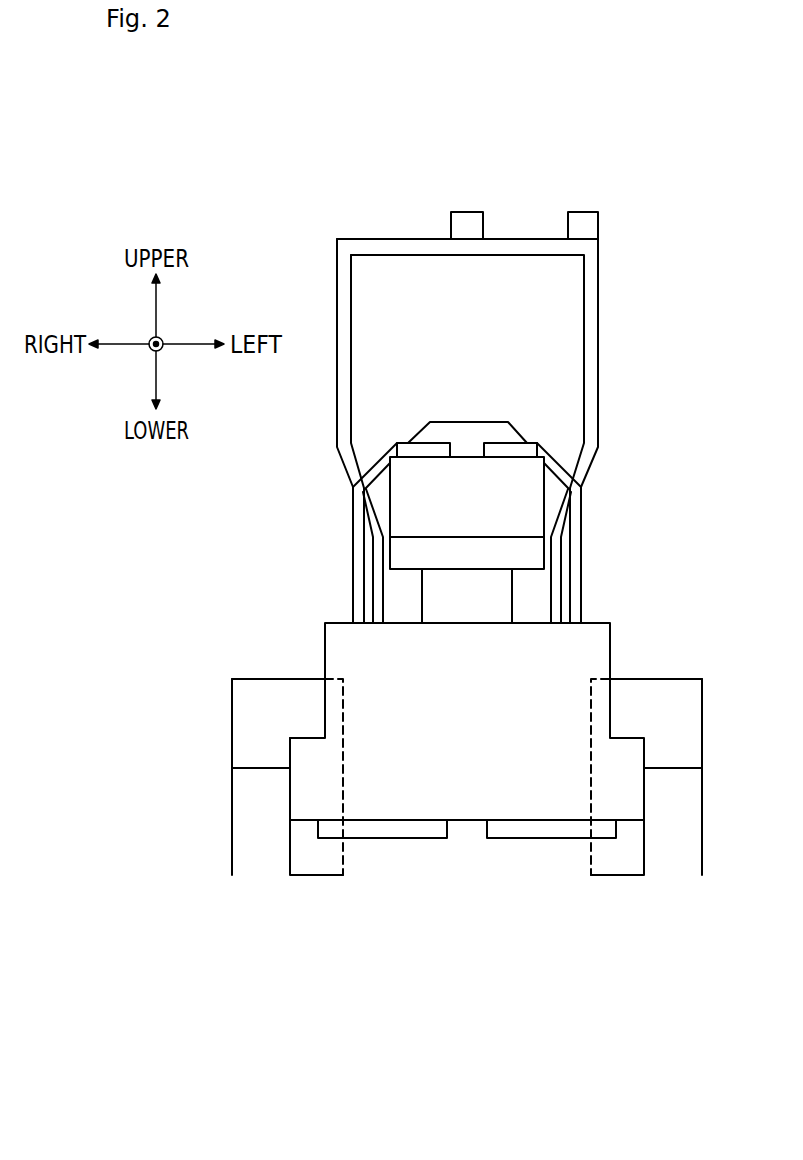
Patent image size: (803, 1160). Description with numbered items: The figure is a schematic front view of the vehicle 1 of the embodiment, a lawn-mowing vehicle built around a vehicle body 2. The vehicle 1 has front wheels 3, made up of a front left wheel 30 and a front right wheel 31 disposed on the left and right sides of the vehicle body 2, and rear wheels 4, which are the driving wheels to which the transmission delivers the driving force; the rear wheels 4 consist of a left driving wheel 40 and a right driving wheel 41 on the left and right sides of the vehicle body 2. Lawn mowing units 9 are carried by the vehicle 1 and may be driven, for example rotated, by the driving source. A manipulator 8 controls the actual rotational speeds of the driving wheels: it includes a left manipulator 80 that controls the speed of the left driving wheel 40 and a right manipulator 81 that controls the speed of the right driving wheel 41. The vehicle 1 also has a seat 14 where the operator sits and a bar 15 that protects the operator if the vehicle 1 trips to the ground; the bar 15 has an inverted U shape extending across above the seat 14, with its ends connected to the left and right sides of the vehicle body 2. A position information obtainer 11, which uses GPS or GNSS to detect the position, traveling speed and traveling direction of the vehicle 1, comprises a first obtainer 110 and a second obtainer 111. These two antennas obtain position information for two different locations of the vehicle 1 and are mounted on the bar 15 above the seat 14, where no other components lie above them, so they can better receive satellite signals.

The vehicle 1 is at (588, 92).
The vehicle body 2 is at (335, 623).
The front wheels 3 is at (467, 856).
The rear wheels 4 is at (467, 905).
The manipulator 8 is at (467, 446).
The lawn mowing units 9 is at (533, 838).
The position information obtainer 11 is at (524, 167).
The seat 14 is at (467, 420).
The bar 15 is at (365, 239).
The front left wheel 30 is at (680, 877).
The front right wheel 31 is at (260, 877).
The left driving wheel 40 is at (702, 731).
The right driving wheel 41 is at (232, 731).
The left manipulator 80 is at (532, 443).
The right manipulator 81 is at (408, 443).
The first obtainer 110 is at (467, 212).
The second obtainer 111 is at (585, 212).